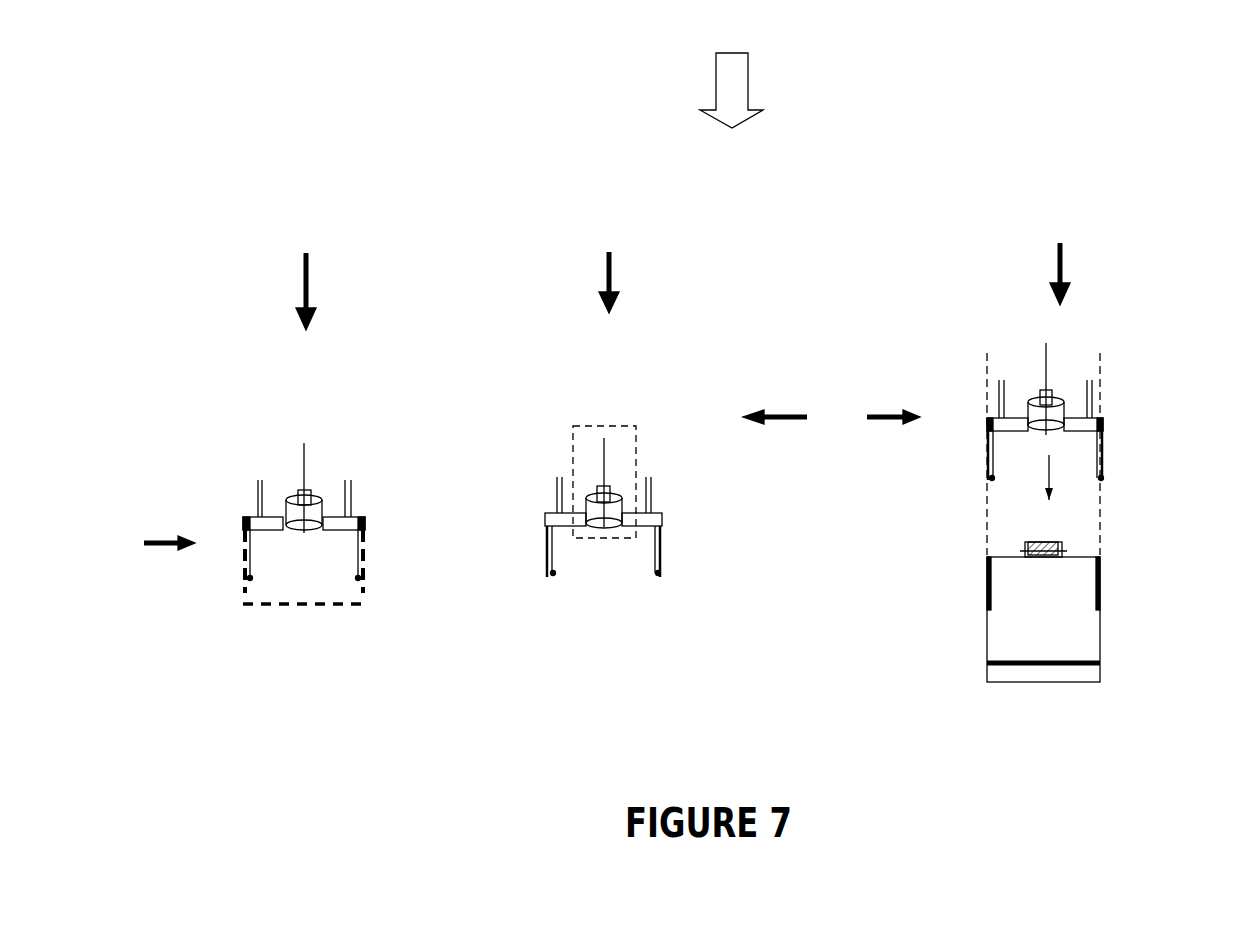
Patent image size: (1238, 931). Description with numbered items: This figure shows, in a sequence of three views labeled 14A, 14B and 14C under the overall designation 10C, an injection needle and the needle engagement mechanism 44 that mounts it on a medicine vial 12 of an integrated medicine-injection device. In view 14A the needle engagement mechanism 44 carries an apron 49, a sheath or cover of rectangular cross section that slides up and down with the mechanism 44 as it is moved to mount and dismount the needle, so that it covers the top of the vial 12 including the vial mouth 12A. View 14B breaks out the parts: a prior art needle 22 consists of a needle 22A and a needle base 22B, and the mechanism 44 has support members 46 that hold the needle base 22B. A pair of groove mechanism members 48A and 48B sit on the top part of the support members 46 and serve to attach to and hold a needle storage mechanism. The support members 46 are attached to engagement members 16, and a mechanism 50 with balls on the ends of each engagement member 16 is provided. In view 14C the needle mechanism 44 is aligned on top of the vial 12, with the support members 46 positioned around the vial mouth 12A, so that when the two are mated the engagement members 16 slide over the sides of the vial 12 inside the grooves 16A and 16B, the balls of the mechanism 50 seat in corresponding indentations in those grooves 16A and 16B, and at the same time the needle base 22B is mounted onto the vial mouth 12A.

The pick and place system sequence 10C is at (756, 79).
The view 14A is at (293, 452).
The view 14B is at (824, 435).
The view 14C is at (1052, 389).
The needle engagement mechanism 44 is at (527, 476).
The apron 49 is at (282, 607).
The needle 22 is at (618, 458).
The needle 22A is at (610, 467).
The needle base 22B is at (593, 502).
The groove mechanism member 48A is at (557, 488).
The groove mechanism member 48B is at (648, 487).
The support members 46 is at (643, 532).
The engagement members 16 is at (655, 545).
The mechanism with balls 50 is at (655, 582).
The medicine vial 12 is at (1039, 592).
The vial mouth 12A is at (1053, 540).
The groove 16A is at (985, 582).
The groove 16B is at (1107, 583).